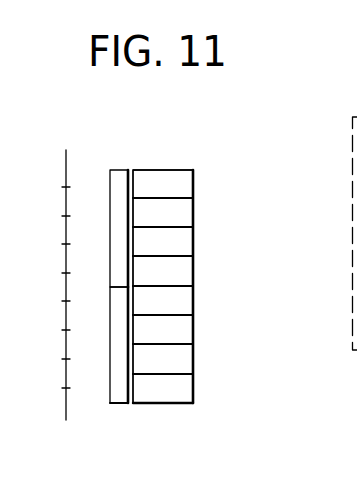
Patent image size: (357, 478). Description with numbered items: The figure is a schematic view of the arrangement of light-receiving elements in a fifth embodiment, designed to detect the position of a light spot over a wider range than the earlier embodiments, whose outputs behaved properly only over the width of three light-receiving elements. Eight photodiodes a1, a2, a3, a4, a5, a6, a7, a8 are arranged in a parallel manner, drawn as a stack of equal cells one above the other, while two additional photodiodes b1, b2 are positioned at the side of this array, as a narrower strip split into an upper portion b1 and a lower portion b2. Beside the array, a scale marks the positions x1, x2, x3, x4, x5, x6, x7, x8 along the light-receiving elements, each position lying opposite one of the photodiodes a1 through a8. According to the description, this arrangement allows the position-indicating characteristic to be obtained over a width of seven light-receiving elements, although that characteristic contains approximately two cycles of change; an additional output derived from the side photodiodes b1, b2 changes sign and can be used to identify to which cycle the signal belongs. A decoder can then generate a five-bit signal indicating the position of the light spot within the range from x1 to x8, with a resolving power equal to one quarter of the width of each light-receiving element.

The photodiode a1 is at (193, 181).
The photodiode a2 is at (193, 210).
The photodiode a3 is at (193, 238).
The photodiode a4 is at (193, 268).
The photodiode a5 is at (193, 298).
The photodiode a6 is at (193, 326).
The photodiode a7 is at (193, 356).
The photodiode a8 is at (193, 386).
The additional photodiode b1 is at (118, 170).
The additional photodiode b2 is at (125, 404).
The light spot position x1 is at (48, 186).
The light spot position x2 is at (48, 215).
The light spot position x3 is at (48, 243).
The light spot position x4 is at (48, 272).
The light spot position x5 is at (48, 300).
The light spot position x6 is at (48, 329).
The light spot position x7 is at (48, 358).
The light spot position x8 is at (48, 387).